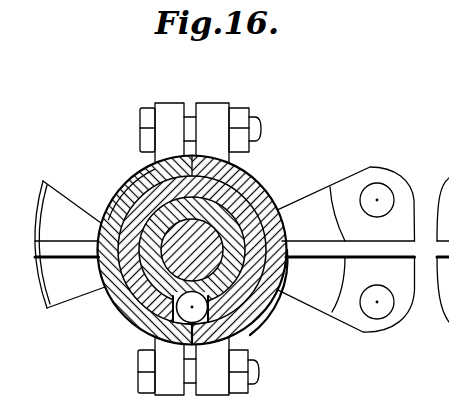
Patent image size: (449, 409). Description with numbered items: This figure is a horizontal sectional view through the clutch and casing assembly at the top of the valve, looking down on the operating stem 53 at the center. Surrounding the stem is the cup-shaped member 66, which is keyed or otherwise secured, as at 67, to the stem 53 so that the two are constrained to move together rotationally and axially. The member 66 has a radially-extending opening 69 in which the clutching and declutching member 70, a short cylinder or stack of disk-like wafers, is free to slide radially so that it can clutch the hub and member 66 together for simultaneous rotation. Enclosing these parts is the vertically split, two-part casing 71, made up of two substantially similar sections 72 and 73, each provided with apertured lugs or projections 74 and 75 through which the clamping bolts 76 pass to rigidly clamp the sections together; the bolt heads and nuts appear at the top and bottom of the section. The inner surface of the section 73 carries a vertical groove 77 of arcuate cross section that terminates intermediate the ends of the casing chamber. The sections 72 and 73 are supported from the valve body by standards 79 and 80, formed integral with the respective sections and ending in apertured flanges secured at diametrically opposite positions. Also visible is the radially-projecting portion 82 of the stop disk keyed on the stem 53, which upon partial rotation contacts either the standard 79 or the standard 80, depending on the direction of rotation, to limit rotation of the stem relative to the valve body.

The operating stem 53 is at (253, 208).
The cup-shaped member 66 is at (230, 322).
The key 67 is at (227, 189).
The radially-extending opening 69 is at (240, 334).
The clutching and declutching member 70 is at (190, 309).
The two-part casing 71 is at (250, 167).
The casing section 72 is at (272, 298).
The casing section 73 is at (110, 298).
The apertured lug 74 is at (212, 110).
The apertured lug 75 is at (171, 108).
The clamping bolt 76 is at (259, 124).
The vertical groove 77 is at (98, 210).
The standard 79 is at (347, 308).
The standard 80 is at (63, 293).
The radially-projecting portion 82 is at (133, 177).